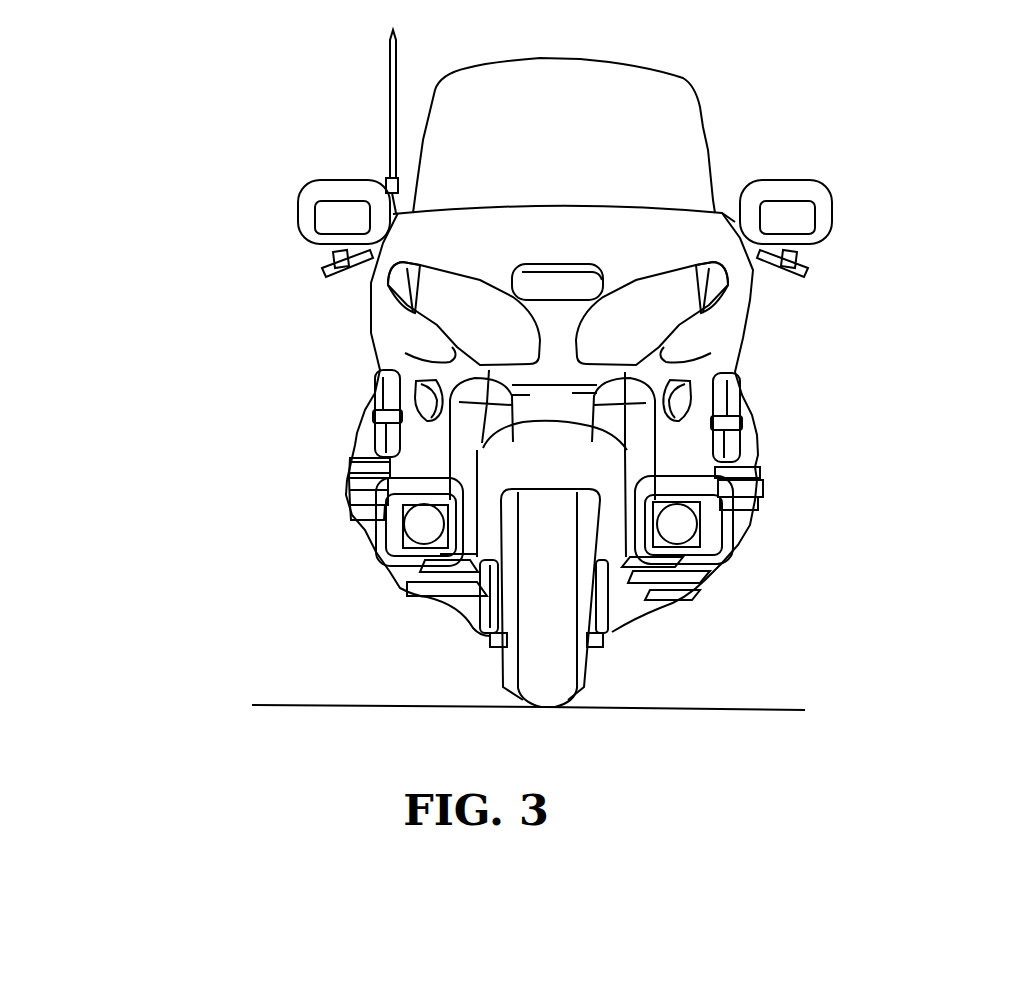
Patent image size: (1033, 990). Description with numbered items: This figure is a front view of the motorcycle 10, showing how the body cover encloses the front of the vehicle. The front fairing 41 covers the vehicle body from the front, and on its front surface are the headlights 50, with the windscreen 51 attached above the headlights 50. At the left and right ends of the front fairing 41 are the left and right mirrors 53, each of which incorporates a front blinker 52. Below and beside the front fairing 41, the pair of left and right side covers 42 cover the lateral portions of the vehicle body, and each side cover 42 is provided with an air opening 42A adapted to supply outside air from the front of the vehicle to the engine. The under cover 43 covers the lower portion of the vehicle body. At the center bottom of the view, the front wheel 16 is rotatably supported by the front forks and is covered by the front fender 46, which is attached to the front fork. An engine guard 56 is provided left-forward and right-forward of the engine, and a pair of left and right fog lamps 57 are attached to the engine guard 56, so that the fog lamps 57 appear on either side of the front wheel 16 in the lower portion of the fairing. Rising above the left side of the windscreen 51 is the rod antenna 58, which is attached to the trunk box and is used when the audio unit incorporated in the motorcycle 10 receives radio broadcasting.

The motorcycle 10 is at (165, 119).
The front wheel 16 is at (565, 681).
The front fairing 41 is at (684, 238).
The side covers 42 is at (373, 378).
The air openings 42A is at (410, 370).
The under cover 43 is at (445, 614).
The front fender 46 is at (452, 467).
The headlights 50 is at (478, 278).
The windscreen 51 is at (698, 102).
The front blinker 52 is at (327, 213).
The mirrors 53 is at (348, 178).
The engine guard 56 is at (693, 553).
The fog lamps 57 is at (420, 523).
The rod antenna 58 is at (388, 117).